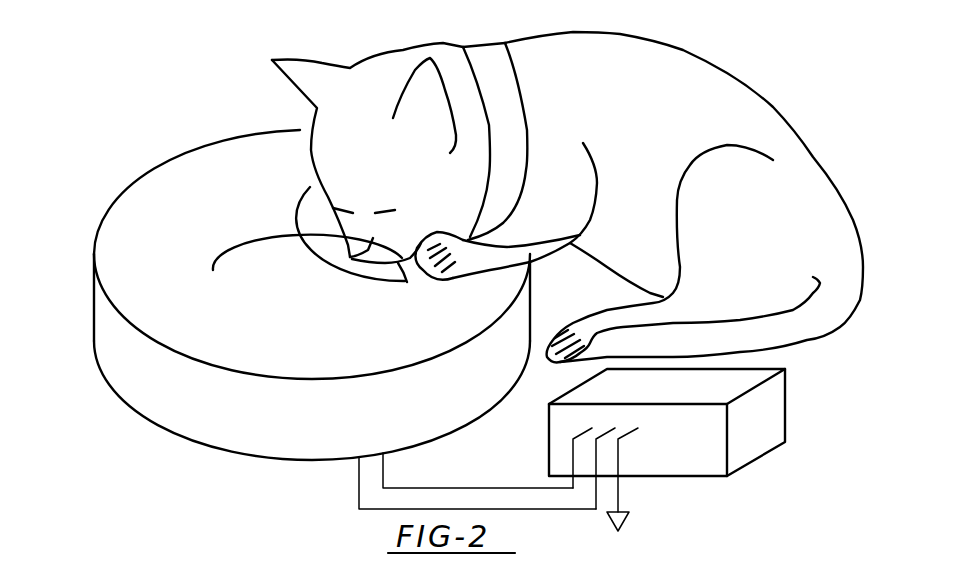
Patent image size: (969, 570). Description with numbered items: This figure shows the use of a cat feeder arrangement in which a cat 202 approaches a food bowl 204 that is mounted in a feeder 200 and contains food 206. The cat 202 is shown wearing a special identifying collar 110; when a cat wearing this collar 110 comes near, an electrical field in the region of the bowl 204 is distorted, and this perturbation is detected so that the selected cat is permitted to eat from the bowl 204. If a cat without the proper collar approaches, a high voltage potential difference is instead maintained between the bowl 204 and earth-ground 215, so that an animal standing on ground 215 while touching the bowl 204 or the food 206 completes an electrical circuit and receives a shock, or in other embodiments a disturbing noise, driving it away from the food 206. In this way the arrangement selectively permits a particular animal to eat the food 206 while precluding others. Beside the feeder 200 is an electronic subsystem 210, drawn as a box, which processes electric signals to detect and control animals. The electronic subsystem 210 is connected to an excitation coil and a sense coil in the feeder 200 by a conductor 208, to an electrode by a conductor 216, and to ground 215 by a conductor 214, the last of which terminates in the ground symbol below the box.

The identifying collar 110 is at (492, 43).
The feeder 200 is at (134, 171).
The cat 202 is at (236, 51).
The food bowl 204 is at (240, 231).
The food 206 is at (324, 285).
The conductor 208 is at (412, 486).
The electronic subsystem 210 is at (732, 482).
The conductor 214 is at (618, 461).
The earth-ground 215 is at (631, 514).
The conductor 216 is at (463, 509).